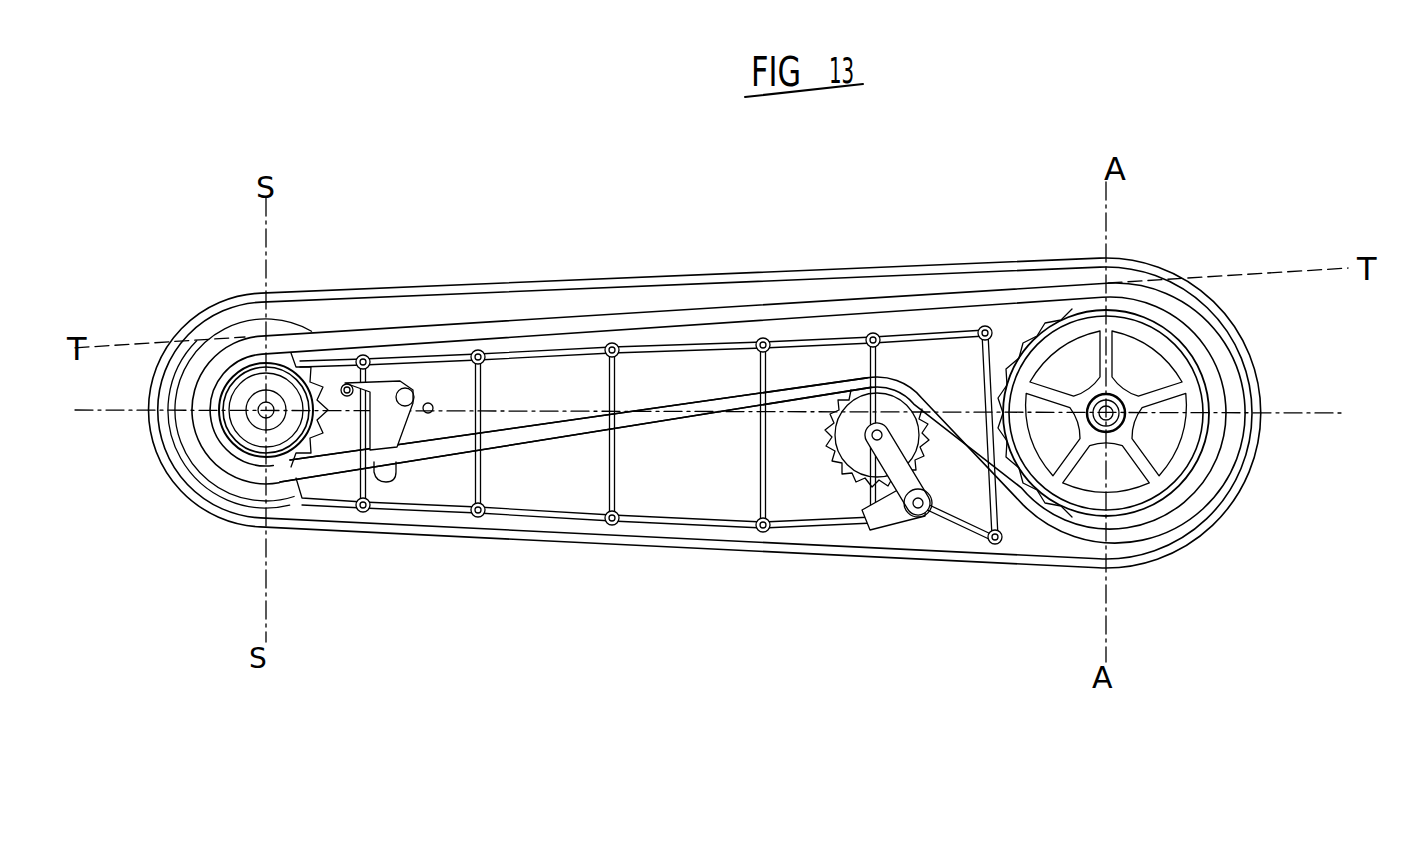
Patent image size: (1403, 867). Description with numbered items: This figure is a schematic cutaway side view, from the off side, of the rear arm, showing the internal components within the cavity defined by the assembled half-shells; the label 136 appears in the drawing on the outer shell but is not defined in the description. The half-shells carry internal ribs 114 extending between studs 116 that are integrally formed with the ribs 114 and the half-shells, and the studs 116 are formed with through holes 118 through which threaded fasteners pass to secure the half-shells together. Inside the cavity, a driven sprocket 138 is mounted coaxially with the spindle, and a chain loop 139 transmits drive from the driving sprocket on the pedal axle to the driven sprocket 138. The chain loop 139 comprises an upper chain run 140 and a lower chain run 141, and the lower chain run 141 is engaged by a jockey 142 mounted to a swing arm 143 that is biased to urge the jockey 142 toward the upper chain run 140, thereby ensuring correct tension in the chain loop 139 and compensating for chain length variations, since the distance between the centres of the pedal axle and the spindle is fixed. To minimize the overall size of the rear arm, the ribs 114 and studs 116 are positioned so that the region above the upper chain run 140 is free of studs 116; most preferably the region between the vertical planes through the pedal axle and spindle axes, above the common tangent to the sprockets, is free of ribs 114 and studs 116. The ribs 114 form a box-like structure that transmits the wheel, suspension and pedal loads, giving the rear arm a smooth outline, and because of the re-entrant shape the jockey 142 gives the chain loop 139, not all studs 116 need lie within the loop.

The internal rib 114 is at (575, 366).
The stud 116 is at (623, 361).
The through hole 118 is at (875, 337).
The housing 136 is at (705, 391).
The driven sprocket 138 is at (300, 458).
The chain loop 139 is at (1212, 368).
The upper chain run 140 is at (553, 332).
The lower chain run 141 is at (568, 430).
The jockey 142 is at (850, 452).
The swing arm 143 is at (893, 470).